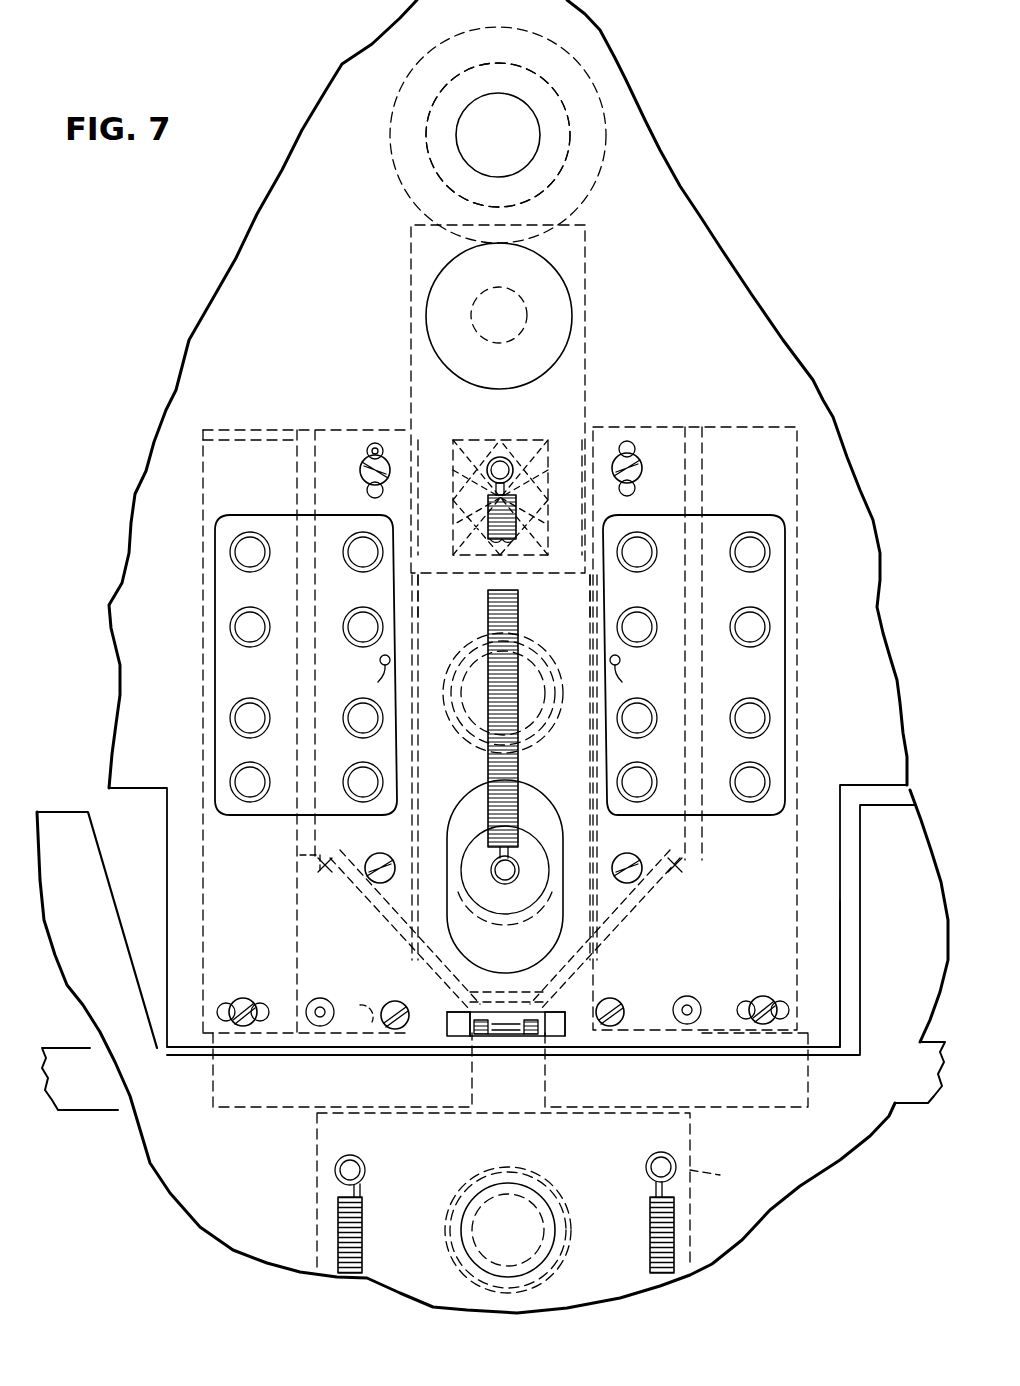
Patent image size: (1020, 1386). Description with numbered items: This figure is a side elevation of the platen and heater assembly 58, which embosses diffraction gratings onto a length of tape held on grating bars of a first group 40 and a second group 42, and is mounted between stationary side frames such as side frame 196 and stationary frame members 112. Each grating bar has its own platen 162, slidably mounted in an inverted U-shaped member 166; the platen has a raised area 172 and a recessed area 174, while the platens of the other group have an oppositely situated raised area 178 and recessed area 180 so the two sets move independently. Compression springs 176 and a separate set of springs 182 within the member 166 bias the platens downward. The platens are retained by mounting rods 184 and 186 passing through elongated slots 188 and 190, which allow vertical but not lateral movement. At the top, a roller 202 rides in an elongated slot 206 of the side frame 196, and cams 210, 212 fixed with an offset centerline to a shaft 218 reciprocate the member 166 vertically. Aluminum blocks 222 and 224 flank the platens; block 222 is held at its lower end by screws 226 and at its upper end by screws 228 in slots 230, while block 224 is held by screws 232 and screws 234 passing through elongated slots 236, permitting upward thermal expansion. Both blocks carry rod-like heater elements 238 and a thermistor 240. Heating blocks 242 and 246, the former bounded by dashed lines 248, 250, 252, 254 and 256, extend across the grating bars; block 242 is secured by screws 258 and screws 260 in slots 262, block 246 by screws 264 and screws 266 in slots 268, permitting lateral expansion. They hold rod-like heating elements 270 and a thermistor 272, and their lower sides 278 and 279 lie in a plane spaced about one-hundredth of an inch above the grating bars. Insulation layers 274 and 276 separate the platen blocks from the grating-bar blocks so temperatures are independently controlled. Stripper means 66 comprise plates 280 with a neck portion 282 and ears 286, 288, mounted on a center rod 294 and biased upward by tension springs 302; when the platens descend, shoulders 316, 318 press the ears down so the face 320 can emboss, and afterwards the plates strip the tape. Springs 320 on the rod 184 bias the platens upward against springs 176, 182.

The first group of grating bar means 40 is at (90, 1112).
The second group of grating bar means 42 is at (918, 1102).
The platen and heater assembly 58 is at (802, 118).
The stripper means 66 is at (640, 1140).
The frame member 112 is at (160, 1183).
The platen 162 is at (410, 952).
The U-shaped member 166 is at (522, 957).
The raised area 172 is at (425, 545).
The recessed area 174 is at (570, 580).
The compression-type springs 176 is at (458, 468).
The raised area 178 is at (582, 545).
The recessed area 180 is at (475, 580).
The springs 182 is at (548, 472).
The mounting rod 184 is at (538, 862).
The mounting rod 186 is at (485, 765).
The elongated slot 188 is at (612, 930).
The elongated slot 190 is at (525, 760).
The side frame 196 is at (702, 236).
The roller 202 is at (552, 274).
The elongated slot 206 is at (552, 366).
The cam 210 is at (604, 102).
The cam 212 is at (498, 135).
The shaft 218 is at (472, 118).
The aluminum block 222 is at (316, 878).
The aluminum block 224 is at (690, 866).
The screw 226 is at (370, 874).
The screw 228 is at (360, 470).
The slot 230 is at (376, 452).
The screw 232 is at (640, 869).
The screw 234 is at (720, 402).
The elongated slot 236 is at (627, 452).
The rod-like heater elements 238 is at (340, 577).
The thermistor 240 is at (499, 677).
The aluminum heating block 242 is at (205, 846).
The aluminum heating block 246 is at (796, 925).
The dashed line 248 is at (214, 906).
The dashed line 250 is at (216, 433).
The dashed line 252 is at (295, 458).
The dashed line 254 is at (380, 930).
The dashed line 256 is at (372, 1012).
The screws 258 is at (398, 1040).
The screws 260 is at (240, 1000).
The slot 262 is at (228, 1016).
The screws 264 is at (612, 1035).
The screws 266 is at (775, 1000).
The slot 268 is at (770, 1025).
The rod-like heating elements 270 is at (232, 560).
The thermistor 272 is at (320, 1028).
The layer of insulation 274 is at (306, 836).
The layer of insulation 276 is at (696, 834).
The lower side 278 is at (456, 1040).
The lower side 279 is at (524, 1040).
The plate 280 is at (692, 1170).
The neck portion 282 is at (516, 1040).
The ear 286 is at (540, 1040).
The ear 288 is at (482, 1038).
The center rod 294 is at (532, 1234).
The tension-type springs 302 is at (338, 1230).
The shoulder 316 is at (480, 1010).
The shoulder 318 is at (532, 1010).
The face / springs 320 is at (490, 815).